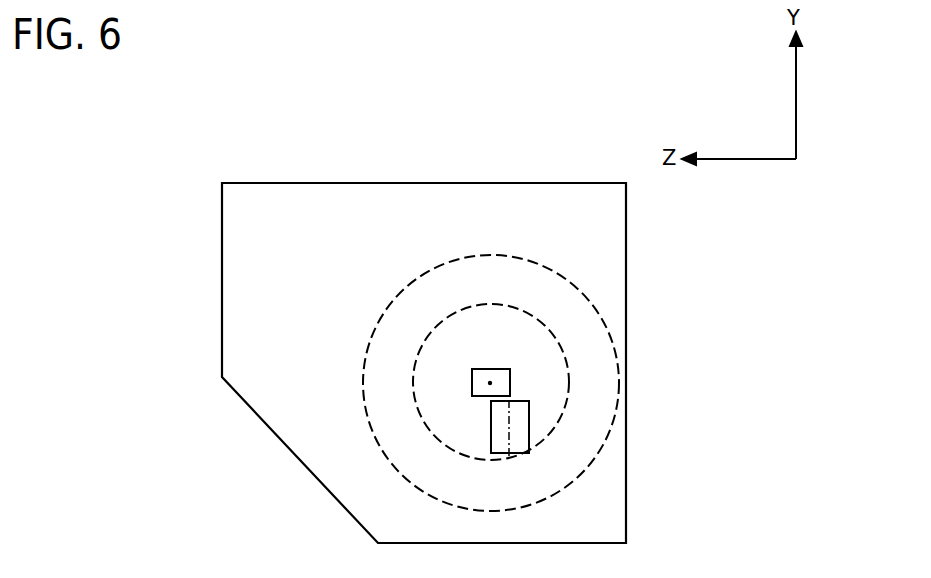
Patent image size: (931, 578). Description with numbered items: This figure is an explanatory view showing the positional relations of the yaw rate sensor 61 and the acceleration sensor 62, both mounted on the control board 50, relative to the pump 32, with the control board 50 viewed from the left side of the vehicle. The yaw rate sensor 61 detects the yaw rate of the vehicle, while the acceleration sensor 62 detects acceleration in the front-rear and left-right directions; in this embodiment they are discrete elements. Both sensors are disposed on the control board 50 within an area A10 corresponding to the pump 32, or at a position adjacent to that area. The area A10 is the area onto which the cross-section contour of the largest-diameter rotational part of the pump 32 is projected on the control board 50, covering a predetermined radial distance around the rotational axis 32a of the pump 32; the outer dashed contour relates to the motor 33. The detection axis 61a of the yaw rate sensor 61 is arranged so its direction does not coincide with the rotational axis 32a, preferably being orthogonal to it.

The control board 50 is at (378, 188).
The motor 33 is at (522, 257).
The area corresponding to the pump A10 is at (440, 352).
The pump 32 is at (448, 318).
The acceleration sensor 62 is at (485, 376).
The rotational axis of the pump 32a is at (490, 383).
The yaw rate sensor 61 is at (525, 440).
The detection axis 61a is at (509, 422).